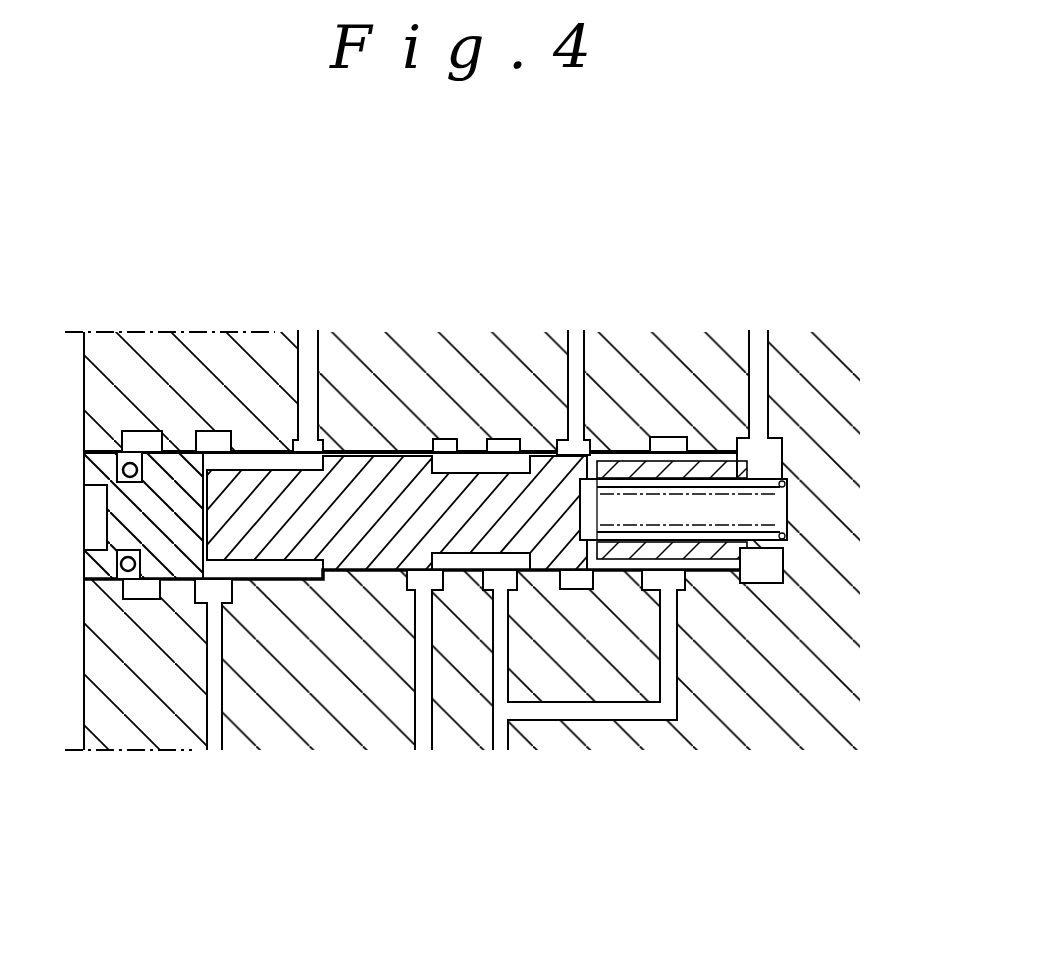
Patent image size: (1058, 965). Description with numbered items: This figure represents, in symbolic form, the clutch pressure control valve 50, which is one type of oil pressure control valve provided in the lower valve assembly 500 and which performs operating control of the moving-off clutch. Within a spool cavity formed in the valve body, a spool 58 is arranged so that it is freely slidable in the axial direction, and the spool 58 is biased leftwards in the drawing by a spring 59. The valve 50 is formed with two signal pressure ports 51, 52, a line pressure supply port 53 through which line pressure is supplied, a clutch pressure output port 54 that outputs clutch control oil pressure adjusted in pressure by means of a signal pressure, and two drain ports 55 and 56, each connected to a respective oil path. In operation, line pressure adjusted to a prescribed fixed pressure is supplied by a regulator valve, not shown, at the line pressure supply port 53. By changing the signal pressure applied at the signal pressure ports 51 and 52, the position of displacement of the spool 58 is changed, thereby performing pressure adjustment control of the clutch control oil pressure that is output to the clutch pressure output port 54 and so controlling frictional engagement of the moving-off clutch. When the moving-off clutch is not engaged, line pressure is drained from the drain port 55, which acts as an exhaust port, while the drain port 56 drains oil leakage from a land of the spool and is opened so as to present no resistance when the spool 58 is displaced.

The clutch pressure control valve 50 is at (500, 501).
The lower valve assembly 500 is at (740, 703).
The signal pressure port 51 is at (219, 696).
The signal pressure port 52 is at (309, 360).
The line pressure supply port 53 is at (583, 691).
The clutch pressure output port 54 is at (574, 361).
The drain port 55 is at (429, 691).
The drain port 56 is at (762, 373).
The spool 58 is at (710, 547).
The spring 59 is at (790, 557).